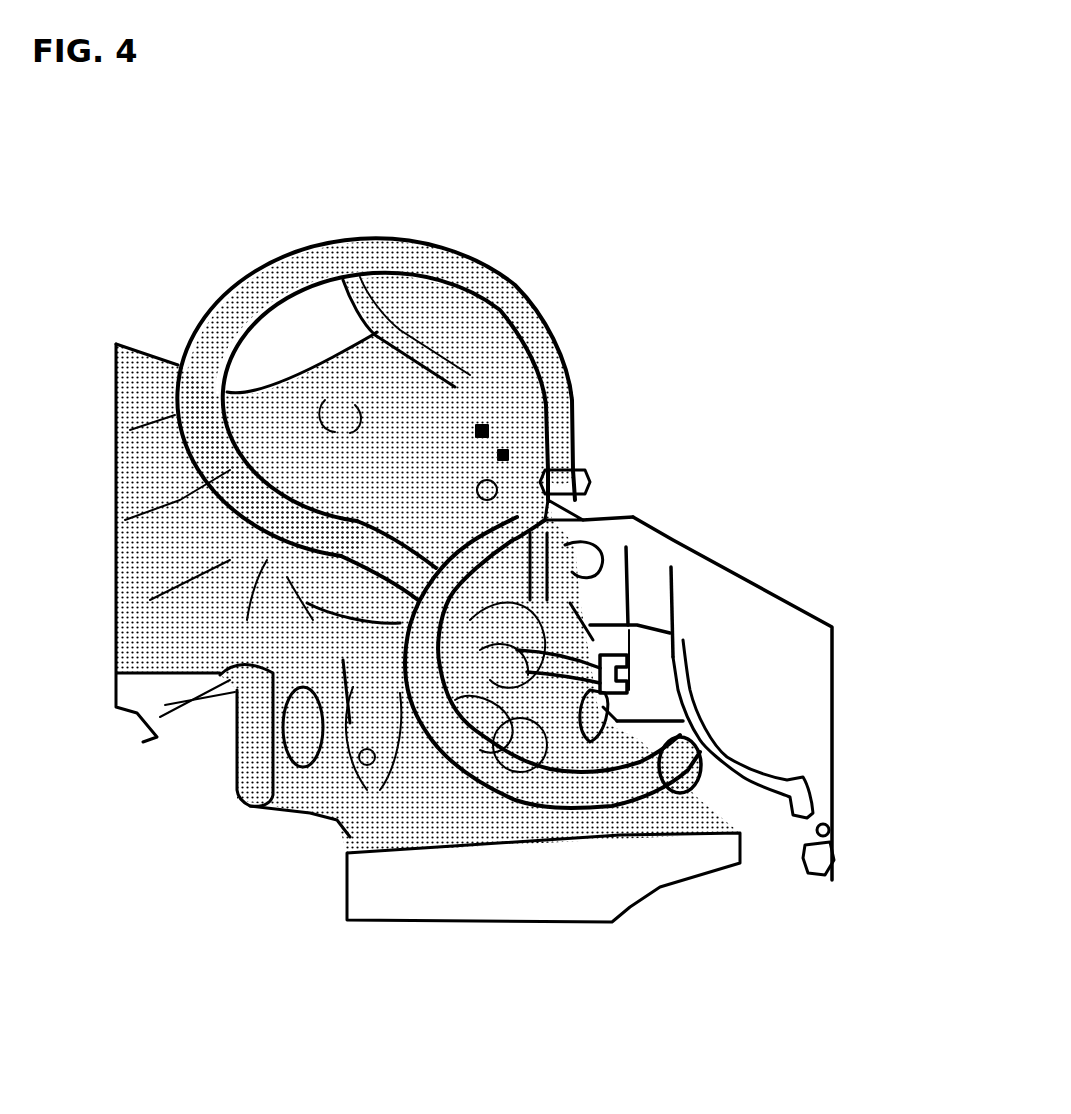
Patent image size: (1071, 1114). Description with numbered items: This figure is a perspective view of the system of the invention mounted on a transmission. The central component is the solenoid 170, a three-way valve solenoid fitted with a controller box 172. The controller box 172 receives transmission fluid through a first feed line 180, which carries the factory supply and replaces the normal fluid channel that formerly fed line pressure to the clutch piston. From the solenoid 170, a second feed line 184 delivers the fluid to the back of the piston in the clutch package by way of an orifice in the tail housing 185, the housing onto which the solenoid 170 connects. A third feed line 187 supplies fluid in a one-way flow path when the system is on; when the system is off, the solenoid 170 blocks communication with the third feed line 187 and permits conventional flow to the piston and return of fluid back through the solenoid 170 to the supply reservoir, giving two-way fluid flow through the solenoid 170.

The solenoid 170 is at (637, 562).
The controller box 172 is at (650, 690).
The first feed line 180 is at (477, 745).
The second feed line 184 is at (257, 305).
The tail housing 185 is at (408, 513).
The third feed line 187 is at (763, 767).